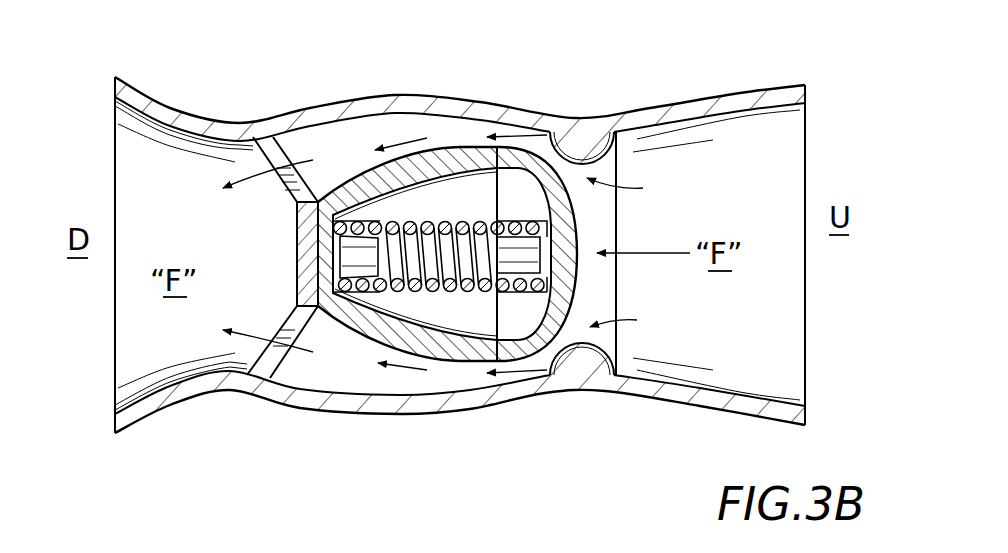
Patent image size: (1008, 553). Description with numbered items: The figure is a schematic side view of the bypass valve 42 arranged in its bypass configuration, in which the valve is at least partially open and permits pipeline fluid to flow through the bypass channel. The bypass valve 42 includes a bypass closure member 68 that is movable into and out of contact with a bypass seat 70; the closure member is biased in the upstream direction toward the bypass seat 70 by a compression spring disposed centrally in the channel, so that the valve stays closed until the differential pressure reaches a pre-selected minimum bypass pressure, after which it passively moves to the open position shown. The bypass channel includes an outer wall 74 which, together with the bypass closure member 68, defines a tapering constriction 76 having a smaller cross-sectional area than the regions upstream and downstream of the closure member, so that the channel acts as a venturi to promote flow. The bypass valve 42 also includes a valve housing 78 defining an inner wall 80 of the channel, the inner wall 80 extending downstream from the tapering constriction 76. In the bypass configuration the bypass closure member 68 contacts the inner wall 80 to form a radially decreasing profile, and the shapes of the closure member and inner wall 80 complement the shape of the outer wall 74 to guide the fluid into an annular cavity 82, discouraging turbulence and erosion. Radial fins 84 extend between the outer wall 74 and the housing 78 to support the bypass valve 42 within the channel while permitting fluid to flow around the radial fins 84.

The bypass valve 42 is at (507, 62).
The bypass closure member 68 is at (566, 215).
The bypass seat 70 is at (578, 150).
The outer wall 74 is at (424, 408).
The tapering constriction 76 is at (527, 397).
The valve housing 78 is at (357, 345).
The inner wall 80 is at (432, 165).
The annular cavity 82 is at (332, 160).
The radial fins 84 is at (293, 183).